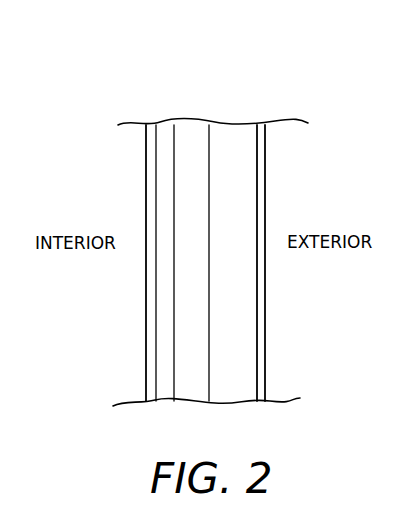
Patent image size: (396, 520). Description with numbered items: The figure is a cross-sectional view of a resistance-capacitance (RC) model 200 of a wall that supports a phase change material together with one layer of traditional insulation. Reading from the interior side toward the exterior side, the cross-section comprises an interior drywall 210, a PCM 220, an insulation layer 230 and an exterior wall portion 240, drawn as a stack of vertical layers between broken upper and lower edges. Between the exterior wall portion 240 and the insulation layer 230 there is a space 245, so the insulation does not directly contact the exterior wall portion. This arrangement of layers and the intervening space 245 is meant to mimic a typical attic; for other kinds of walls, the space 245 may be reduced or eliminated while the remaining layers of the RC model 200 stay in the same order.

The resistance-capacitance (RC) model 200 is at (279, 90).
The interior drywall 210 is at (138, 156).
The PCM 220 is at (167, 132).
The insulation layer 230 is at (188, 132).
The exterior wall portion 240 is at (268, 190).
The space 245 is at (238, 352).